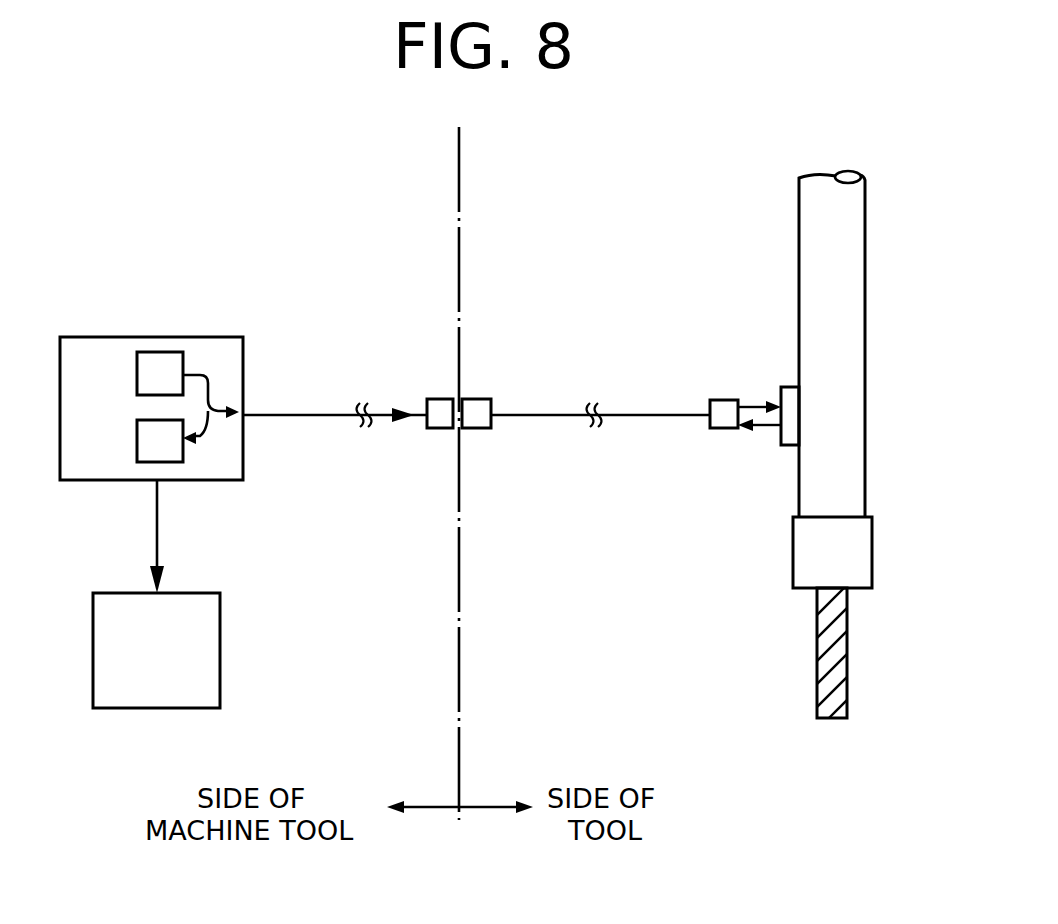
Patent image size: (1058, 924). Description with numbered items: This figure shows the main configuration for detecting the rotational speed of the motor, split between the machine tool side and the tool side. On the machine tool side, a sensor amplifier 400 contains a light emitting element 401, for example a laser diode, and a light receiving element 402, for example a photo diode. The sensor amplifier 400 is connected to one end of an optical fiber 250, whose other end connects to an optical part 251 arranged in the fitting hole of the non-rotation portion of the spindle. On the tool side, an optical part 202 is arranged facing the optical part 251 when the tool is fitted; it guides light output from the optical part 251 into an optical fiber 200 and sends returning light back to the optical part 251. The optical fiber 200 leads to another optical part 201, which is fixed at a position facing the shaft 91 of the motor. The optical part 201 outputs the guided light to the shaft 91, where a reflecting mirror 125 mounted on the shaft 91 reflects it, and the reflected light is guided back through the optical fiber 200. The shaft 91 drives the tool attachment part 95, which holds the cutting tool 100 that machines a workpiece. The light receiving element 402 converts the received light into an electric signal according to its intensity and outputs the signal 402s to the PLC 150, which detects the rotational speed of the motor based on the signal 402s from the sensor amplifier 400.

The sensor amplifier 400 is at (128, 337).
The light emitting element 401 is at (158, 352).
The light receiving element 402 is at (173, 462).
The signal 402s is at (157, 540).
The PLC 150 is at (220, 648).
The optical fiber 250 is at (318, 415).
The optical part 251 is at (440, 412).
The optical part 202 is at (477, 418).
The optical fiber 200 is at (550, 415).
The optical part 201 is at (723, 418).
The reflecting mirror 125 is at (795, 408).
The shaft 91 is at (840, 332).
The tool attachment part 95 is at (843, 552).
The cutting tool 100 is at (832, 652).